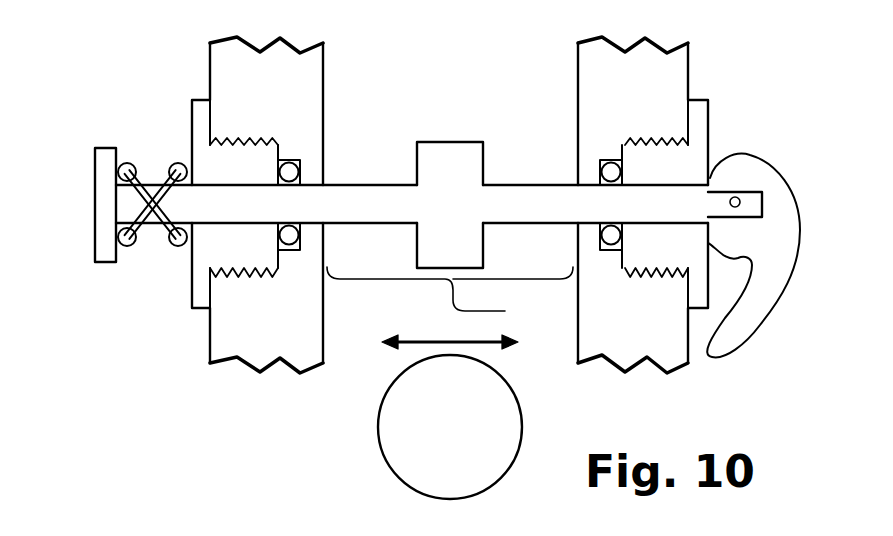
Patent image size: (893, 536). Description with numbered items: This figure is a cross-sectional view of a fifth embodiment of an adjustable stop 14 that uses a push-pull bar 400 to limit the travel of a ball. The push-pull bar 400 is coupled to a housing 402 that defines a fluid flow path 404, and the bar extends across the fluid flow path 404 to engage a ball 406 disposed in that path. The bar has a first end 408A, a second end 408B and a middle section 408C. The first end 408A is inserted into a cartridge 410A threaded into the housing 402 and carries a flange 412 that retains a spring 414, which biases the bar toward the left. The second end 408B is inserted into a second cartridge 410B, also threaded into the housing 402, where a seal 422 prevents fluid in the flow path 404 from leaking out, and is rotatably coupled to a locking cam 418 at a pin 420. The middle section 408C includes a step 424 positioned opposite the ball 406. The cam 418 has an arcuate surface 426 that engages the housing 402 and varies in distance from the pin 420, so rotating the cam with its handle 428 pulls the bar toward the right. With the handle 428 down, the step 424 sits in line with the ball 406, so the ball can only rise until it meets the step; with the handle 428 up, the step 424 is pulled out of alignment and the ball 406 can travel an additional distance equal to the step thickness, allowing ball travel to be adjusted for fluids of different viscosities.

The adjustable stop 14 is at (501, 132).
The push-pull bar 400 is at (369, 178).
The housing 402 is at (667, 65).
The fluid flow path 404 is at (458, 72).
The ball 406 is at (450, 427).
The first end 408A is at (237, 204).
The second end 408B is at (687, 204).
The middle section 408C is at (450, 308).
The cartridge 410A is at (192, 286).
The cartridge 410B is at (678, 155).
The flange 412 is at (103, 170).
The spring 414 is at (128, 168).
The locking cam 418 is at (788, 208).
The pin 420 is at (736, 198).
The seal 422 is at (603, 245).
The step 424 is at (450, 205).
The arcuate surface 426 is at (722, 153).
The handle 428 is at (762, 317).